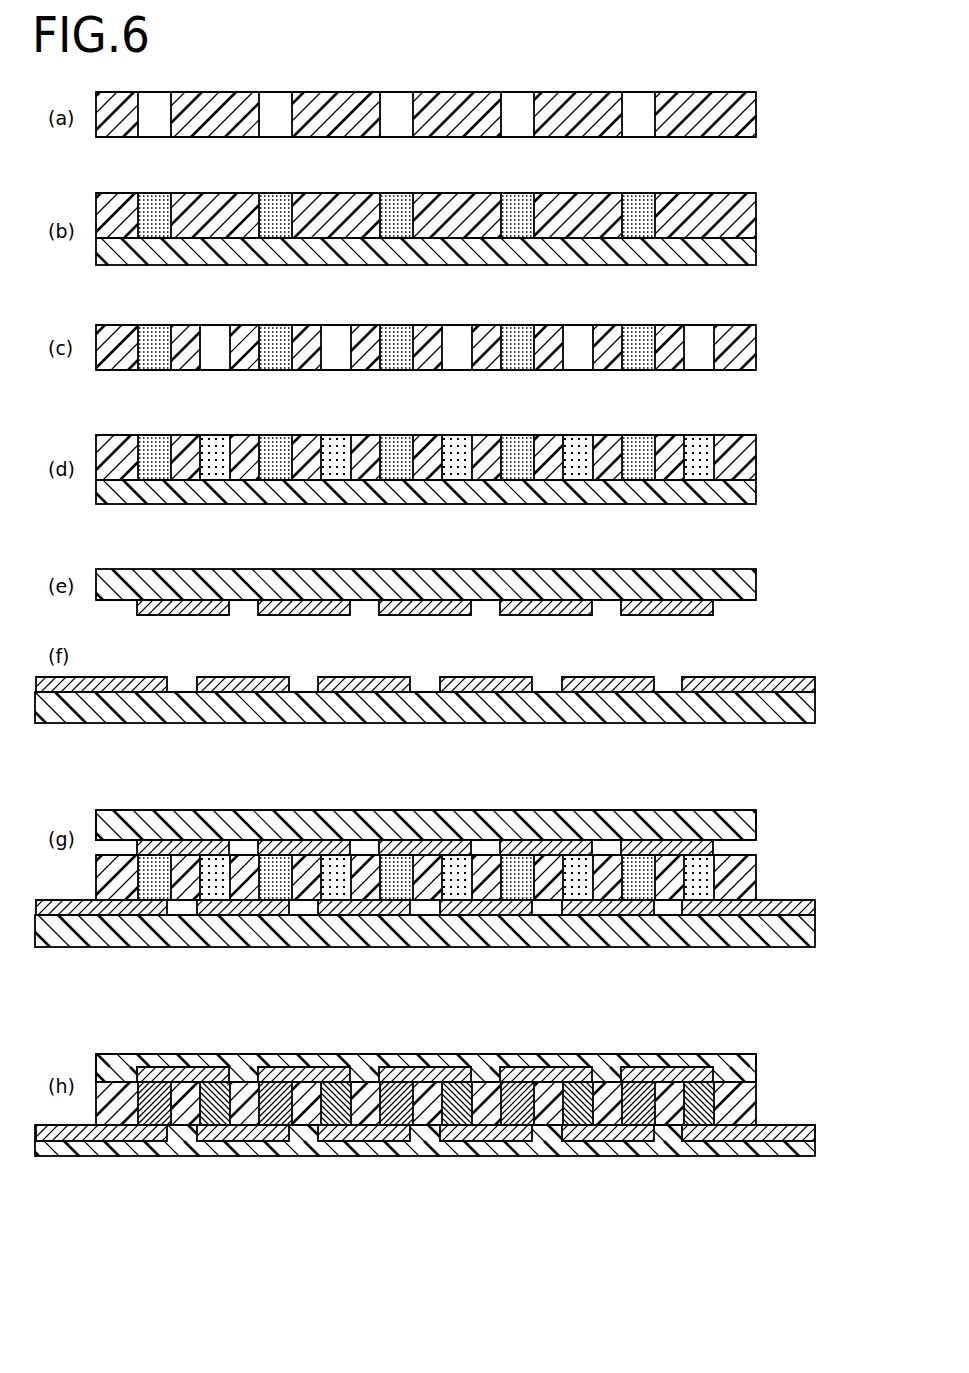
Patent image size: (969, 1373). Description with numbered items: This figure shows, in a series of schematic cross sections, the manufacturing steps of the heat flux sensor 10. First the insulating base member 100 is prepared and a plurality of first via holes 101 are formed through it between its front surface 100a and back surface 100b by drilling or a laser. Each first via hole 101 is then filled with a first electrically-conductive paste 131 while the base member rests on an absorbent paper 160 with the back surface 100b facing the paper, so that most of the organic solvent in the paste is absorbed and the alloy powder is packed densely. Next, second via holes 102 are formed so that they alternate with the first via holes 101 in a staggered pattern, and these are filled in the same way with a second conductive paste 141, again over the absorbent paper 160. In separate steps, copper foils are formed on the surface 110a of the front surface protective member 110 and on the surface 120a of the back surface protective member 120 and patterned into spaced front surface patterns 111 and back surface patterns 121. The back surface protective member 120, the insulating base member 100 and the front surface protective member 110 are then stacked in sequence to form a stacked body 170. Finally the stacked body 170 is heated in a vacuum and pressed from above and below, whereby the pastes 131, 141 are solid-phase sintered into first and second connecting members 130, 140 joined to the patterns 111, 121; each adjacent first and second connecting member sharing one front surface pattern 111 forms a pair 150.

The heat flux sensor 10 is at (318, 1038).
The insulating base member 100 is at (746, 113).
The front surface of insulating base member 100a is at (118, 93).
The back surface of insulating base member 100b is at (112, 138).
The first via holes 101 is at (648, 113).
The second via holes 102 is at (712, 345).
The front surface protective member 110 is at (746, 581).
The surface of front surface protective member 110a is at (113, 603).
The front surface patterns 111 is at (643, 608).
The back surface protective member 120 is at (787, 705).
The surface of back surface protective member 120a is at (107, 688).
The back surface patterns 121 is at (510, 688).
The first connecting member 130 is at (637, 1108).
The first electrically-conductive paste 131 is at (622, 227).
The second connecting member 140 is at (695, 1115).
The second conductive paste 141 is at (690, 478).
The pair 150 is at (717, 789).
The absorbent paper 160 is at (746, 253).
The stacked body 170 is at (355, 795).